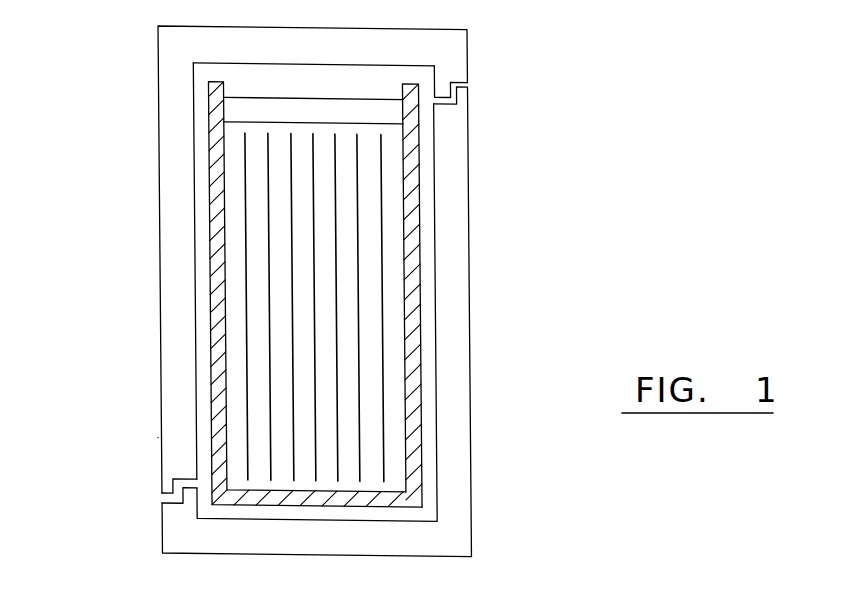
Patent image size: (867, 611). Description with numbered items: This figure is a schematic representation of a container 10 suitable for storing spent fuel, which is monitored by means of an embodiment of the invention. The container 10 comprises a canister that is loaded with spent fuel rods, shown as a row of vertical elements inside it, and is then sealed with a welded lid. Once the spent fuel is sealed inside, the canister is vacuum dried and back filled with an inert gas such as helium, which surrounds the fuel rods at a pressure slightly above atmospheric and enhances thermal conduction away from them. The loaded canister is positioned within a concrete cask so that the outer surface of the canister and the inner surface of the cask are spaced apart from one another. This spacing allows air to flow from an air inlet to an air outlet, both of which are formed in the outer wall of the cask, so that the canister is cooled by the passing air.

The container 10 is at (399, 291).